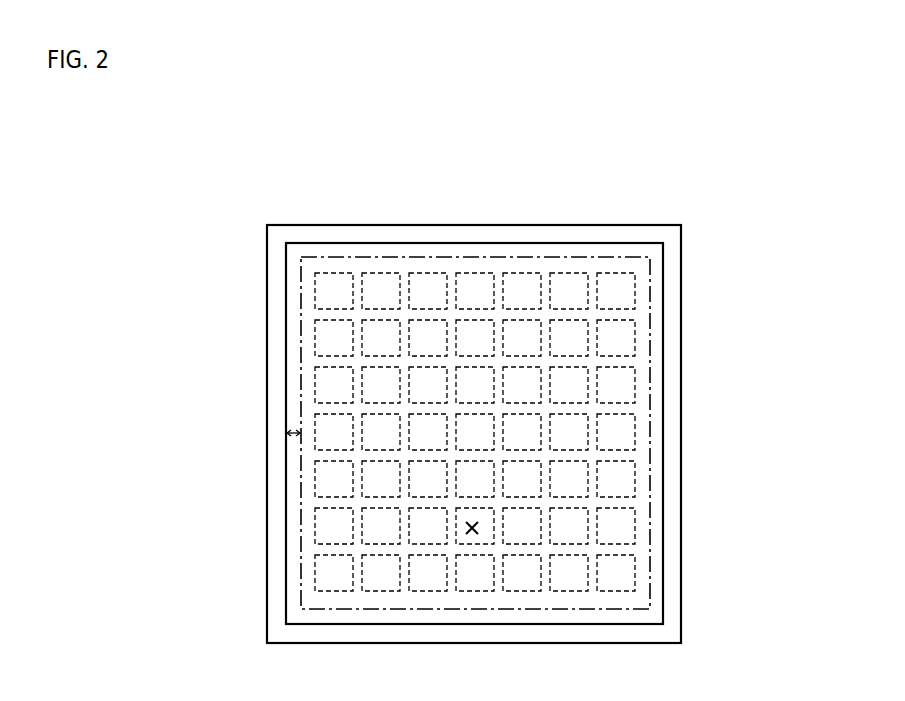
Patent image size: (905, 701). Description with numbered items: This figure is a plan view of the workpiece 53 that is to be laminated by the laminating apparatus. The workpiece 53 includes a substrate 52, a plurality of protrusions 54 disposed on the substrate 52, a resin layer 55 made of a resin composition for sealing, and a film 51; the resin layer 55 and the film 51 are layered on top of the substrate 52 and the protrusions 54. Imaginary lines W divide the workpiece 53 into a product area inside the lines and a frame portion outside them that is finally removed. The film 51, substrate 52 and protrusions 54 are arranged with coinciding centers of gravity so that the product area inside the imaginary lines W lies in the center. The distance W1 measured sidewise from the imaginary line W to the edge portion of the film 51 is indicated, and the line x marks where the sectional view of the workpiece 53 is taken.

The film 51 is at (650, 423).
The substrate 52 is at (672, 487).
The workpiece 53 is at (556, 206).
The protrusions 54 is at (623, 295).
The resin layer 55 is at (652, 350).
The distance from the imaginary line W to the edge portion of the film W1 is at (293, 430).
The line X-X x is at (450, 530).
The imaginary line W is at (298, 563).